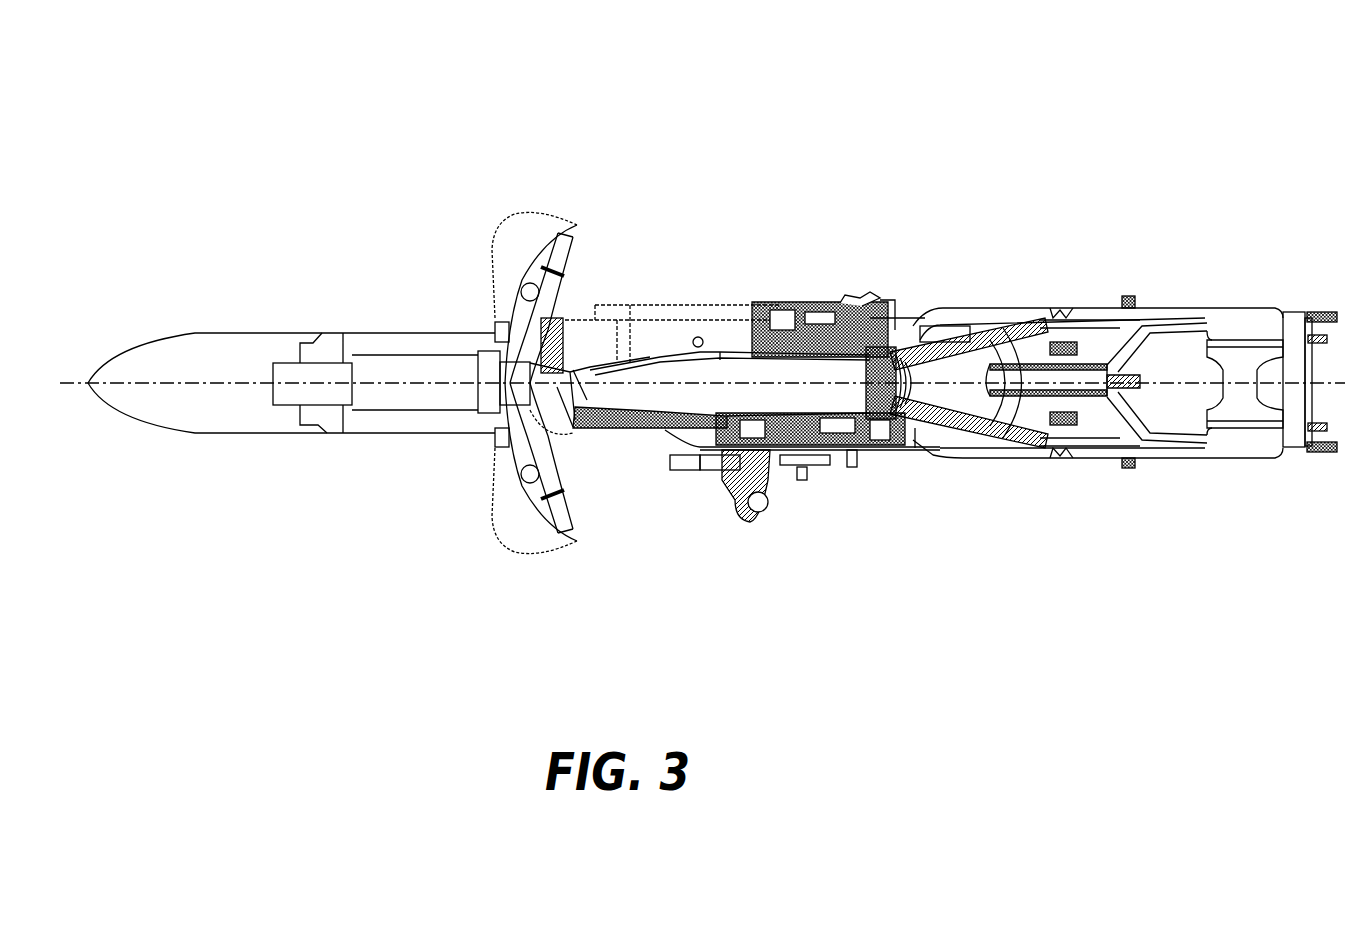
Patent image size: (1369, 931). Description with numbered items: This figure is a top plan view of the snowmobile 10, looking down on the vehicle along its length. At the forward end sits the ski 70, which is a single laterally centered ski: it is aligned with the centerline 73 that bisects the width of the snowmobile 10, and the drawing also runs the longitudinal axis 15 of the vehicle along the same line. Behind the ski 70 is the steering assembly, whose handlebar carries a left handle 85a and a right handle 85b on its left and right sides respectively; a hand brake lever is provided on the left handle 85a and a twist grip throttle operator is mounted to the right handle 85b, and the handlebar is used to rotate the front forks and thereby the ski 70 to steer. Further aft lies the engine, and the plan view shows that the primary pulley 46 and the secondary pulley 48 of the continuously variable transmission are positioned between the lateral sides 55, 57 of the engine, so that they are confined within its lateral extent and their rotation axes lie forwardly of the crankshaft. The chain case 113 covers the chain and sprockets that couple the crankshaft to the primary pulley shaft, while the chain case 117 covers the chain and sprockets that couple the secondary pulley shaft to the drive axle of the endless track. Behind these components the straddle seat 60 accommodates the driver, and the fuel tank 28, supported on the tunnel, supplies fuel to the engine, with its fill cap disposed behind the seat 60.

The snowmobile 10 is at (861, 145).
The longitudinal axis 15 is at (203, 403).
The centerline 73 is at (215, 383).
The ski 70 is at (210, 433).
The left handle 85a is at (572, 525).
The right handle 85b is at (578, 247).
The secondary pulley 48 is at (587, 428).
The chain case 117 is at (663, 305).
The seat 60 is at (850, 398).
The primary pulley 46 is at (707, 427).
The lateral side of the engine 55 is at (794, 310).
The lateral side of the engine 57 is at (800, 450).
The chain case 113 is at (787, 467).
The fuel tank 28 is at (990, 330).